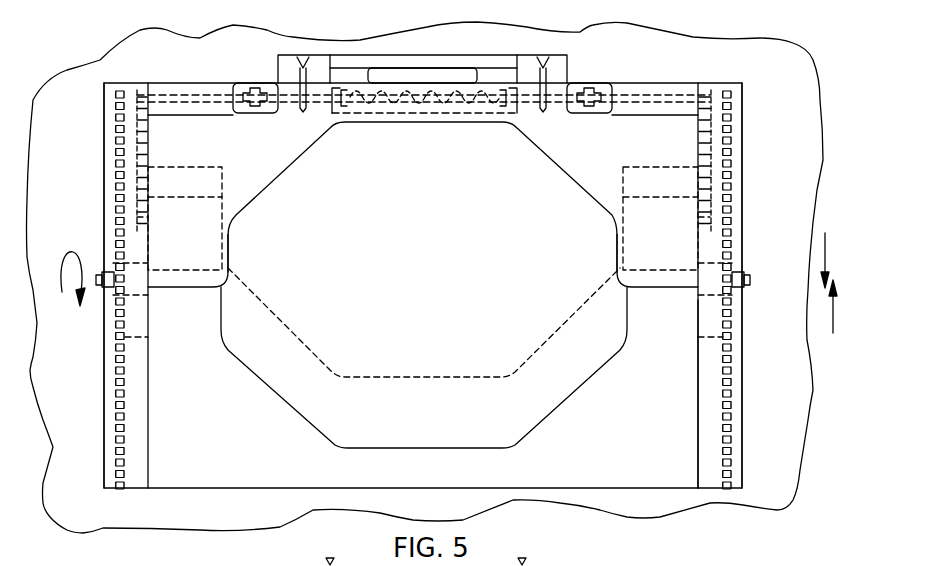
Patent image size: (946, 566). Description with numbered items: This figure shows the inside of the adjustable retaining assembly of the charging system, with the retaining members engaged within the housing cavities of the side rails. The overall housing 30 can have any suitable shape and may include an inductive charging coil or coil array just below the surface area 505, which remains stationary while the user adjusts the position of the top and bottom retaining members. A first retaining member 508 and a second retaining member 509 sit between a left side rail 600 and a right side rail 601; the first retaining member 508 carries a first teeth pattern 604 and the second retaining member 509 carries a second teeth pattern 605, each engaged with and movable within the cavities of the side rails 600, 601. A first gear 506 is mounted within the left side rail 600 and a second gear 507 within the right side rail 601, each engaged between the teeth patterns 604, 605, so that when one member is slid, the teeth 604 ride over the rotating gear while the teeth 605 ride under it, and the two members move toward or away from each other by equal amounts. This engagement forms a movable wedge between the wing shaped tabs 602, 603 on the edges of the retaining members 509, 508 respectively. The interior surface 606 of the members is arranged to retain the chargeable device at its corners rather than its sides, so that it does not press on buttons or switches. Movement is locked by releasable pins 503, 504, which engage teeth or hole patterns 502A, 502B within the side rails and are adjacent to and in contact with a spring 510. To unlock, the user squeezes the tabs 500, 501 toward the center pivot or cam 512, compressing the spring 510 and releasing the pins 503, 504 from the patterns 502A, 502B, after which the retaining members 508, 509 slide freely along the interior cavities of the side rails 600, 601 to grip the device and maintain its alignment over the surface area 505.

The housing 30 is at (88, 54).
The tab 500 is at (273, 88).
The tab 501 is at (575, 88).
The teeth or hole pattern 502A is at (135, 117).
The teeth or hole pattern 502B is at (712, 118).
The releasable pin 503 is at (197, 92).
The releasable pin 504 is at (650, 90).
The surface area 505 is at (337, 330).
The first gear 506 is at (112, 262).
The second gear 507 is at (732, 265).
The first retaining member 508 is at (670, 200).
The second retaining member 509 is at (672, 392).
The spring 510 is at (461, 106).
The cam 512 is at (430, 62).
The left side rail 600 is at (112, 460).
The right side rail 601 is at (735, 448).
The wing shaped tab 602 is at (200, 328).
The wing shaped tab 603 is at (200, 248).
The first teeth pattern 604 is at (117, 153).
The second teeth pattern 605 is at (118, 383).
The interior surface 606 is at (390, 122).